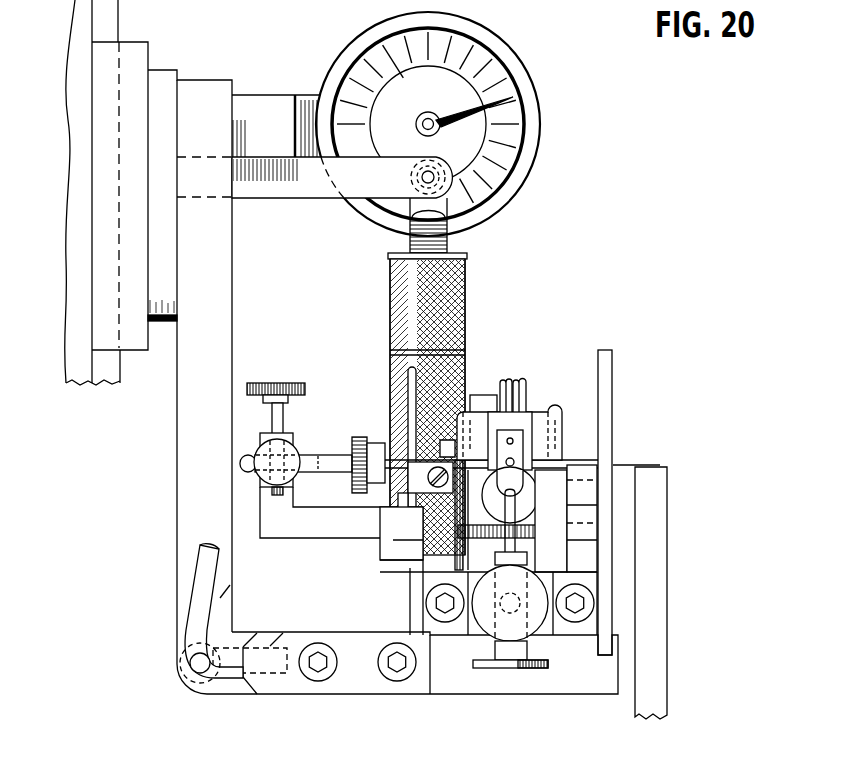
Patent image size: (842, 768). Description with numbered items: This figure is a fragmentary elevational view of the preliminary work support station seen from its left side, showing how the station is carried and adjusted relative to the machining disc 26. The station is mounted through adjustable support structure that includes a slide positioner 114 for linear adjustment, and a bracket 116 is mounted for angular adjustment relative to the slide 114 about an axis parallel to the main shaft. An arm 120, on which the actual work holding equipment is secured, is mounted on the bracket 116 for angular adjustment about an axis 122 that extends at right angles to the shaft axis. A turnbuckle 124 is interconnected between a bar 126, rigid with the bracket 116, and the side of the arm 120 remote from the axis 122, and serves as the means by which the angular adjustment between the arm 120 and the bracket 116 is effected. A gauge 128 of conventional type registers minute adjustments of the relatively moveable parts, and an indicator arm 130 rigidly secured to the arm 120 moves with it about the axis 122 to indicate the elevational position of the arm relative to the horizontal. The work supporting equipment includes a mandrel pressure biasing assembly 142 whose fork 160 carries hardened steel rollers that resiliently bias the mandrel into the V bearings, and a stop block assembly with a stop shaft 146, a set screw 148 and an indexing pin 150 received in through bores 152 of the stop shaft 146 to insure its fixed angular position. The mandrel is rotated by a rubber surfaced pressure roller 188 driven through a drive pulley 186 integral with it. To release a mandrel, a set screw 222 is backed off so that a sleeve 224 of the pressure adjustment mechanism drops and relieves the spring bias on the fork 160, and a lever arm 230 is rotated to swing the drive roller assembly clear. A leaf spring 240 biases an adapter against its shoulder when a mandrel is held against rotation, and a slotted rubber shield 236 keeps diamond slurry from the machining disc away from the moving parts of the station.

The disc 26 is at (668, 520).
The Z slide positioner 114 is at (138, 56).
The bracket 116 is at (211, 258).
The arm 120 is at (462, 675).
The axis 122 is at (196, 668).
The turnbuckle 124 is at (468, 292).
The bar 126 is at (298, 188).
The gauge 128 is at (517, 62).
The indicator arm 130 is at (210, 575).
The mandrel pressure biasing assembly 142 is at (573, 388).
The stop shaft 146 is at (342, 456).
The set screw 148 is at (288, 456).
The indexing pin 150 is at (270, 382).
The through bores 152 is at (318, 473).
The fork 160 is at (558, 412).
The drive pulley 186 is at (528, 381).
The pressure roller 188 is at (505, 381).
The set screw 222 is at (480, 604).
The sleeve 224 is at (515, 655).
The lever arm 230 is at (411, 383).
The slotted rubber shield 236 is at (611, 397).
The leaf spring 240 is at (415, 482).